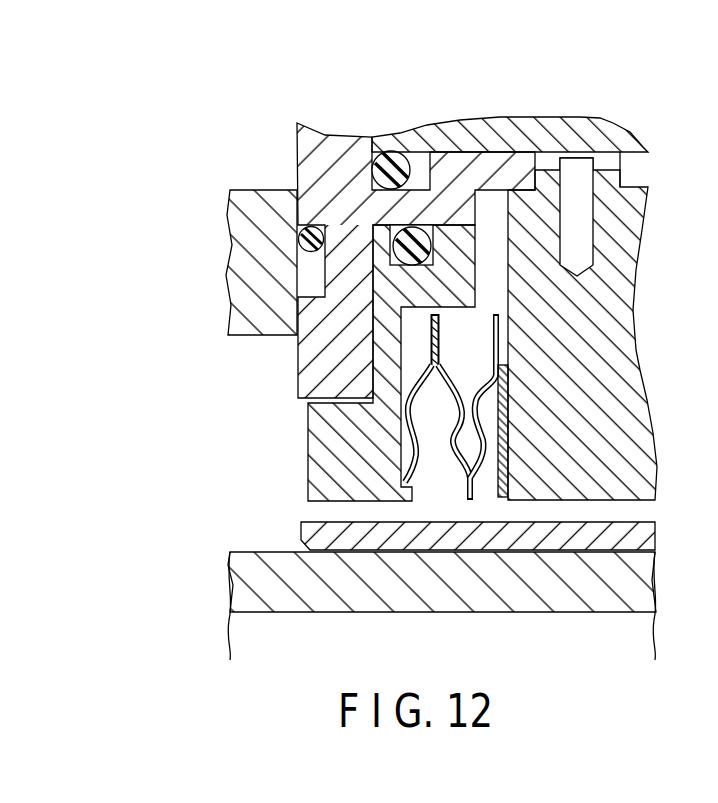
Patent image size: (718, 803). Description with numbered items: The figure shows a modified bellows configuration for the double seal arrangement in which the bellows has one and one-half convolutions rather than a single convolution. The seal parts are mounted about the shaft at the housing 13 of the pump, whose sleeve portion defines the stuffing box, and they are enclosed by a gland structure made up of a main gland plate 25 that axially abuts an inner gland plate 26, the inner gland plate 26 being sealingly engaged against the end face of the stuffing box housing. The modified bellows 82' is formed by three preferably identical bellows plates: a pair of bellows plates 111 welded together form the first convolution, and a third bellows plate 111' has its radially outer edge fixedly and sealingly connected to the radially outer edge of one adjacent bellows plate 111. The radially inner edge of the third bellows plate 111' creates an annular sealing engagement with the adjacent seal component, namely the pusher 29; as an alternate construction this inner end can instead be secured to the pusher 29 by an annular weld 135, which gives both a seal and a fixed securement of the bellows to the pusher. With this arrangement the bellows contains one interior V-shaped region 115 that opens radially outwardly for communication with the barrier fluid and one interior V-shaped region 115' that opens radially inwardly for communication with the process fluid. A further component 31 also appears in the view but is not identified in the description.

The housing 13 is at (242, 233).
The main gland plate 25 is at (517, 132).
The inner gland plate 26 is at (317, 143).
The pusher 29 is at (330, 467).
The housing 31 is at (608, 346).
The modified bellows 82' is at (442, 575).
The bellows plates 111 is at (454, 413).
The third bellows plate 111' is at (325, 357).
The interior V-shaped region 115 is at (584, 407).
The interior V-shaped region 115' is at (336, 423).
The annular weld 135 is at (397, 482).